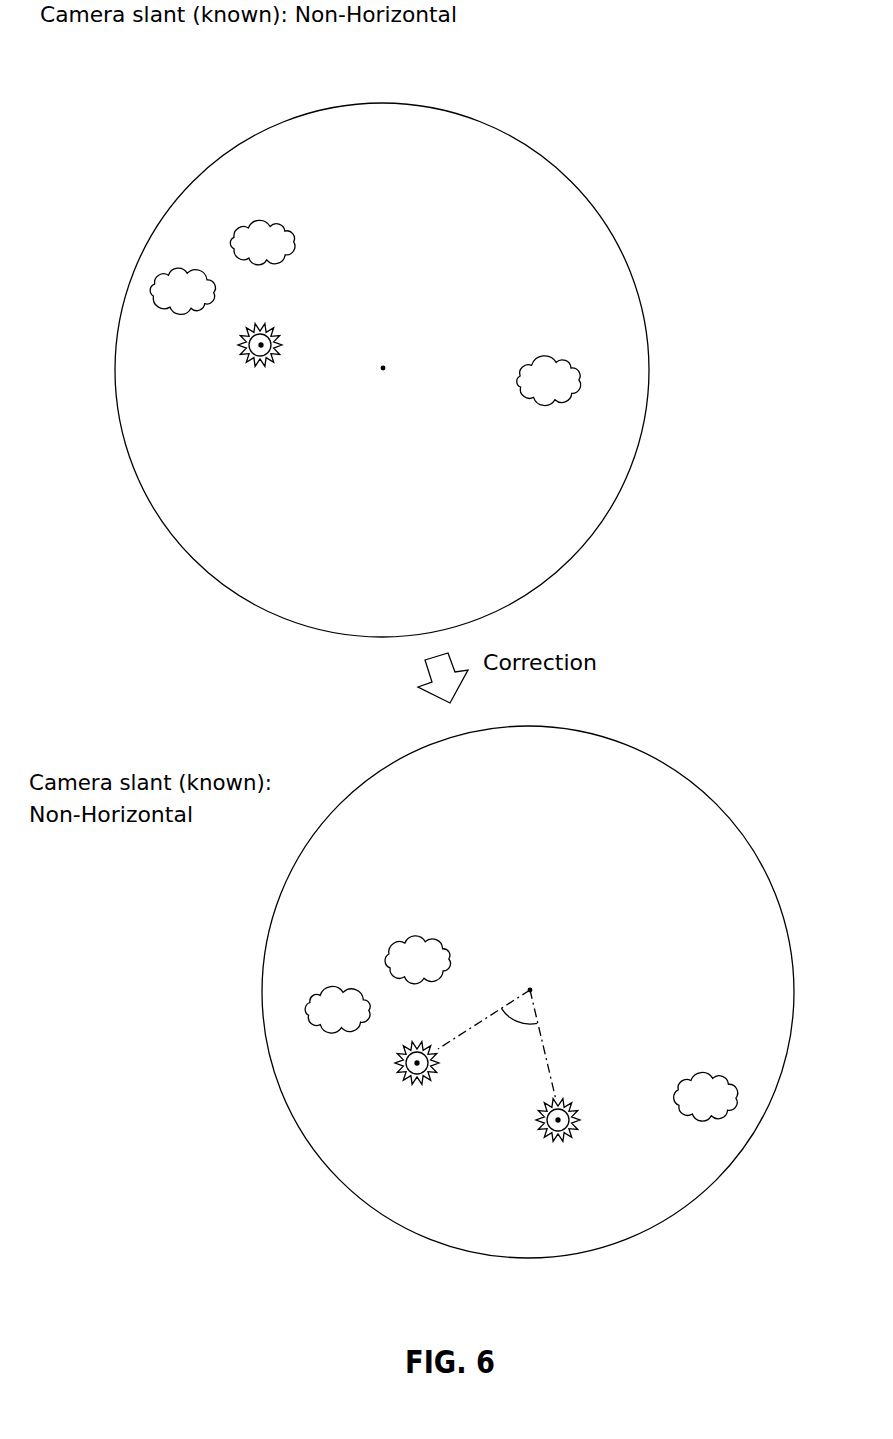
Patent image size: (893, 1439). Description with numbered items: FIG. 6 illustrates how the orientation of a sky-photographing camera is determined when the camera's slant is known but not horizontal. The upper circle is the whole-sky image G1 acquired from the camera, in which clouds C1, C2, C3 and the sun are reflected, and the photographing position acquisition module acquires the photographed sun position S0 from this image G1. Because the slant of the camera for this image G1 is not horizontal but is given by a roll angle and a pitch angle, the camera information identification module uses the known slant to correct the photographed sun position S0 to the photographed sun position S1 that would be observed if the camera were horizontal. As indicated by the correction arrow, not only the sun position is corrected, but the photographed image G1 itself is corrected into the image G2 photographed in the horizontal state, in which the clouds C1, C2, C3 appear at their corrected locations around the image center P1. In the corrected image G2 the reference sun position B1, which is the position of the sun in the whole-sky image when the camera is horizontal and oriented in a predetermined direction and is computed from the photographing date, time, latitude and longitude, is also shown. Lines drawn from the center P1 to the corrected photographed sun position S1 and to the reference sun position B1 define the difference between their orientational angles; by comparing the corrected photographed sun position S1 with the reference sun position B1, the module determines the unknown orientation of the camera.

The image G1 is at (533, 107).
The image G2 is at (678, 729).
The cloud C1 is at (212, 280).
The cloud C2 is at (263, 226).
The cloud C3 is at (552, 361).
The photographed sun position S0 is at (250, 347).
The photographed sun position S1 is at (404, 1066).
The reference sun position B1 is at (560, 1120).
The center P1 is at (385, 368).